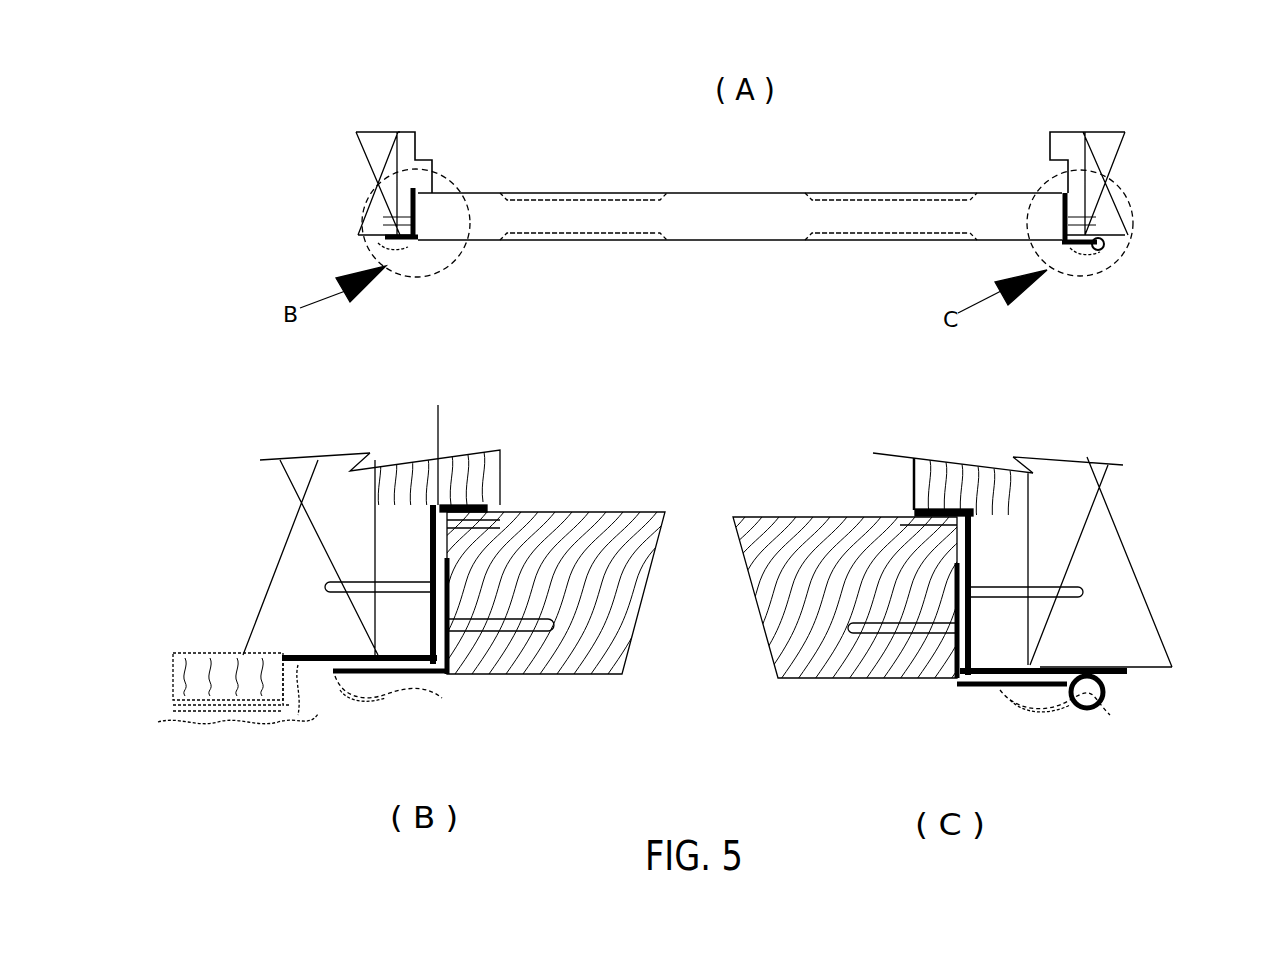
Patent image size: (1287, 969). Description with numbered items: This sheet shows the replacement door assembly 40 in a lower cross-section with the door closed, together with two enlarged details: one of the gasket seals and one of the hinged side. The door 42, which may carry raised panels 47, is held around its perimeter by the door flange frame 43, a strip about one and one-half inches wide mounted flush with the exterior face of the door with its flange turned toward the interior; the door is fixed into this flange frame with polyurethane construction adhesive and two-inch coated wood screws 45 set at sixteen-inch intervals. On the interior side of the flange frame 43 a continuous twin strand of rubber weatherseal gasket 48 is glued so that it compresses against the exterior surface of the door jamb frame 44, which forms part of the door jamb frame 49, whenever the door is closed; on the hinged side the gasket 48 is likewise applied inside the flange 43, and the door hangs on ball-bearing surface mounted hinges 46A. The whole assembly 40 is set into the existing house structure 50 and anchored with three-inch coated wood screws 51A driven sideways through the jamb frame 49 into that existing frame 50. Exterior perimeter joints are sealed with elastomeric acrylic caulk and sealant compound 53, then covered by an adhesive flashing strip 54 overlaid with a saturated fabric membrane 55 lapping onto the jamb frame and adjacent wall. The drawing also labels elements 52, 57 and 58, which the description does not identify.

In FIG. 5A, the replacement door assembly 40 is at (626, 178).
In FIG. 5A, the door 42 is at (742, 232).
In FIG. 5B, the door 42 is at (556, 645).
In FIG. 5C, the door 42 is at (826, 650).
In FIG. 5A, the door flange frame 43 is at (420, 240).
In FIG. 5B, the door flange frame 43 is at (445, 672).
In FIG. 5C, the door flange frame 43 is at (957, 680).
In FIG. 5B, the door jamb frame 44 is at (397, 487).
In FIG. 5C, the door jamb frame 44 is at (968, 485).
In FIG. 5B, the coated wood screws 45 is at (554, 625).
In FIG. 5A, the ball-bearing surface mounted hinges 46A is at (1104, 248).
In FIG. 5C, the ball-bearing surface mounted hinges 46A is at (1098, 705).
In FIG. 5A, the raised panels 47 is at (896, 196).
In FIG. 5B, the rubber weatherseal gasket 48 is at (487, 512).
In FIG. 5C, the rubber weatherseal gasket 48 is at (912, 510).
In FIG. 5A, the door jamb frame 49 is at (408, 150).
In FIG. 5B, the door jamb frame 49 is at (430, 620).
In FIG. 5C, the door jamb frame 49 is at (1125, 673).
In FIG. 5A, the existing house structure 50 is at (380, 143).
In FIG. 5B, the existing house structure 50 is at (310, 554).
In FIG. 5C, the existing house structure 50 is at (1120, 630).
In FIG. 5A, the coated wood screws 51A is at (388, 216).
In FIG. 5B, the coated wood screws 51A is at (350, 578).
In FIG. 5C, the coated wood screws 51A is at (1080, 588).
In FIG. 5A, the sealant 52 is at (405, 245).
In FIG. 5B, the sealant 52 is at (362, 690).
In FIG. 5C, the sealant 52 is at (1085, 720).
In FIG. 5B, the elastomeric acrylic waterproof caulk and sealant compound 53 is at (439, 442).
In FIG. 5B, the adhesive flashing strip 54 is at (282, 655).
In FIG. 5B, the fabric membrane 55 is at (243, 710).
In FIG. 5B, the base sheet 57 is at (180, 712).
In FIG. 5B, the surface layer 58 is at (213, 723).